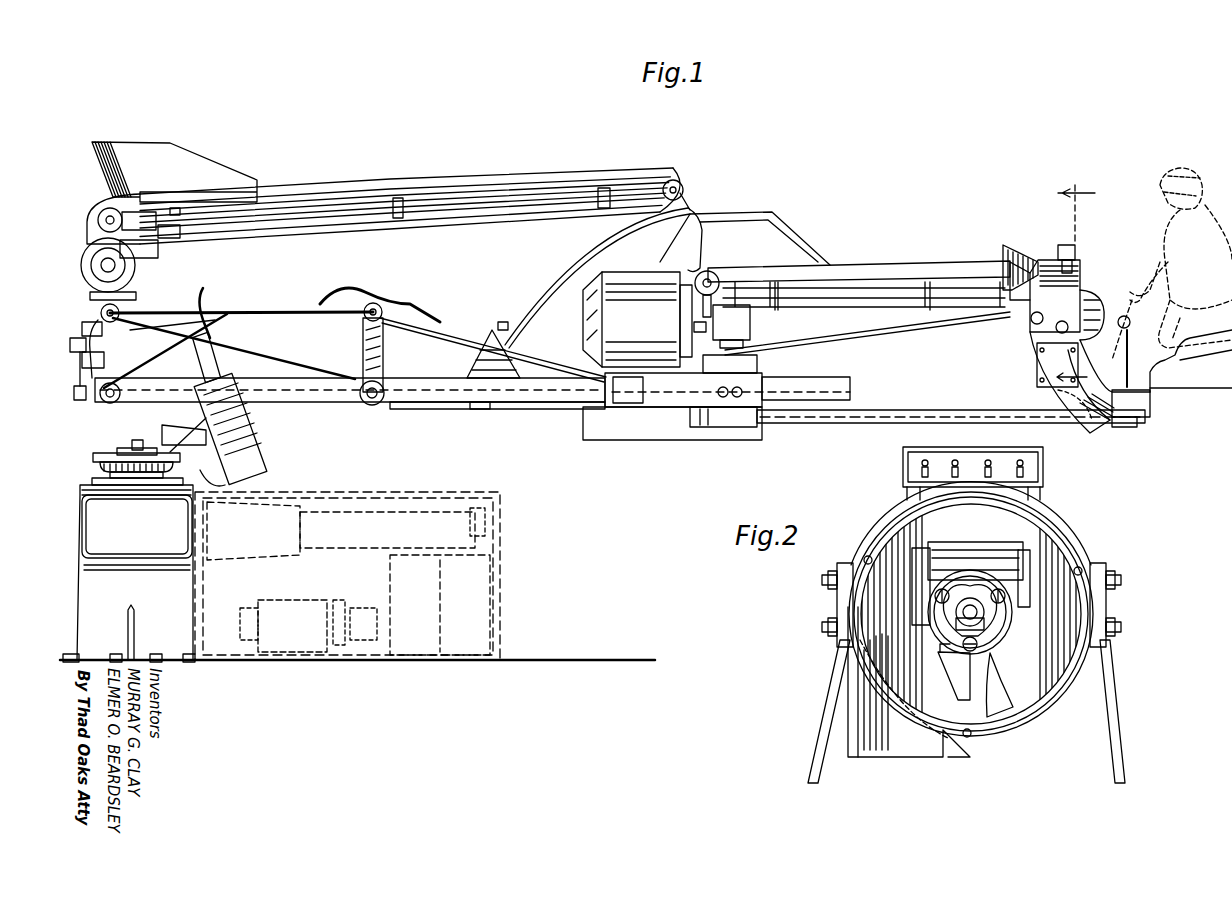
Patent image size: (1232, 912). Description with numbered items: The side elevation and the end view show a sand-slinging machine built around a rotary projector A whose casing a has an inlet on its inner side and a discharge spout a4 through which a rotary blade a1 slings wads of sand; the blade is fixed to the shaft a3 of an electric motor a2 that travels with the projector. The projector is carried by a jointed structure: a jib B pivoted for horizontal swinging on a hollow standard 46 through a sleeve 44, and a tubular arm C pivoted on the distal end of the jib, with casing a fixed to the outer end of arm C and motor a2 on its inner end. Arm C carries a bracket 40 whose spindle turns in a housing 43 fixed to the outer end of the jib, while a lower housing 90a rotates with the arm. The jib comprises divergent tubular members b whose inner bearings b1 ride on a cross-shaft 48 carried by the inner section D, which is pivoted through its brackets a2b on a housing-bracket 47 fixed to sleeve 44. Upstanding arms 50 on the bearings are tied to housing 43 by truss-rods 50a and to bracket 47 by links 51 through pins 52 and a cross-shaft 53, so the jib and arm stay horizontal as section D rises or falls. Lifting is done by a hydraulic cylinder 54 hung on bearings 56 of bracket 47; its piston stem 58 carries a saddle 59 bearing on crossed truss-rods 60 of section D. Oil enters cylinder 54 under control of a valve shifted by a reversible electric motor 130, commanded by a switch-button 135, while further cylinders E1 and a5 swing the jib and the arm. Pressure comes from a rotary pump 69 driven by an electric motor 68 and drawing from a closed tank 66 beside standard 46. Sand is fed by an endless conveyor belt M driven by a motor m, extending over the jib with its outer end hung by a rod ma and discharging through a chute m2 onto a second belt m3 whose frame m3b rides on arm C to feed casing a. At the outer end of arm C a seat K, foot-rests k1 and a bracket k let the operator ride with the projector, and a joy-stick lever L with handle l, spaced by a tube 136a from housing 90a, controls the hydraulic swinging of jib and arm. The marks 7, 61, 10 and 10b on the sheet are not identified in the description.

In FIG. 1, the endless conveyor belt M is at (340, 181).
In FIG. 1, the electric motor m is at (130, 266).
In FIG. 1, the endless conveyor belt m3 is at (135, 255).
In FIG. 2, the endless conveyor belt m3 is at (1008, 542).
In FIG. 1, the chute m2 is at (770, 235).
In FIG. 1, the rod ma is at (556, 285).
In FIG. 1, the links 51 is at (268, 312).
In FIG. 1, the cross-shaft 53 is at (122, 306).
In FIG. 1, the crossed truss-rods 60 is at (258, 336).
In FIG. 1, the piston stem 58 is at (215, 328).
In FIG. 1, the saddle 59 is at (212, 296).
In FIG. 1, the pins 52 is at (398, 300).
In FIG. 1, the cross-shaft 48 is at (360, 405).
In FIG. 1, the inner jib section D is at (312, 408).
In FIG. 1, the sleeve 44 is at (108, 402).
In FIG. 1, the jib B is at (374, 406).
In FIG. 1, the frame rail 10 is at (440, 395).
In FIG. 1, the bearings b1 is at (392, 402).
In FIG. 1, the cylinder a5 is at (478, 404).
In FIG. 1, the tubular members b is at (530, 404).
In FIG. 1, the arms 50 is at (384, 352).
In FIG. 1, the truss-rod 50a is at (478, 350).
In FIG. 1, the cylinder 54 is at (246, 418).
In FIG. 1, the bearings 56 is at (184, 432).
In FIG. 1, the bracket 7 is at (97, 332).
In FIG. 1, the housing-bracket 47 is at (103, 349).
In FIG. 1, the electric motor 130 is at (70, 420).
In FIG. 1, the bracket a2b is at (73, 447).
In FIG. 1, the hollow standard 46 is at (122, 580).
In FIG. 1, the closed tank 66 is at (440, 606).
In FIG. 1, the engine 61 is at (250, 550).
In FIG. 1, the cylinder E1 is at (354, 550).
In FIG. 1, the electric motor 68 is at (286, 606).
In FIG. 1, the rotary pump 69 is at (364, 604).
In FIG. 1, the electric motor a2 is at (637, 319).
In FIG. 1, the bracket 40 is at (724, 340).
In FIG. 1, the housing 43 is at (676, 418).
In FIG. 1, the housing 90a is at (730, 425).
In FIG. 1, the endless conveyor belt m3b is at (905, 274).
In FIG. 1, the arm C is at (845, 334).
In FIG. 1, the tube 136a is at (945, 410).
In FIG. 1, the frame rail 10b is at (880, 376).
In FIG. 1, the rotary projector A is at (1057, 262).
In FIG. 2, the rotary projector A is at (1076, 546).
In FIG. 1, the switch-button 135 is at (1076, 253).
In FIG. 2, the switch-button 135 is at (1026, 465).
In FIG. 1, the rotary blade a1 is at (1028, 258).
In FIG. 2, the rotary blade a1 is at (962, 697).
In FIG. 1, the casing a is at (1064, 294).
In FIG. 2, the casing a is at (1052, 712).
In FIG. 1, the foot-rests k1 is at (1106, 424).
In FIG. 1, the bracket k is at (1150, 410).
In FIG. 1, the handle l is at (1127, 332).
In FIG. 1, the lever L is at (1130, 330).
In FIG. 1, the seat K is at (1191, 361).
In FIG. 2, the seat K is at (815, 740).
In FIG. 2, the shaft a3 is at (980, 614).
In FIG. 2, the discharge spout a4 is at (925, 750).